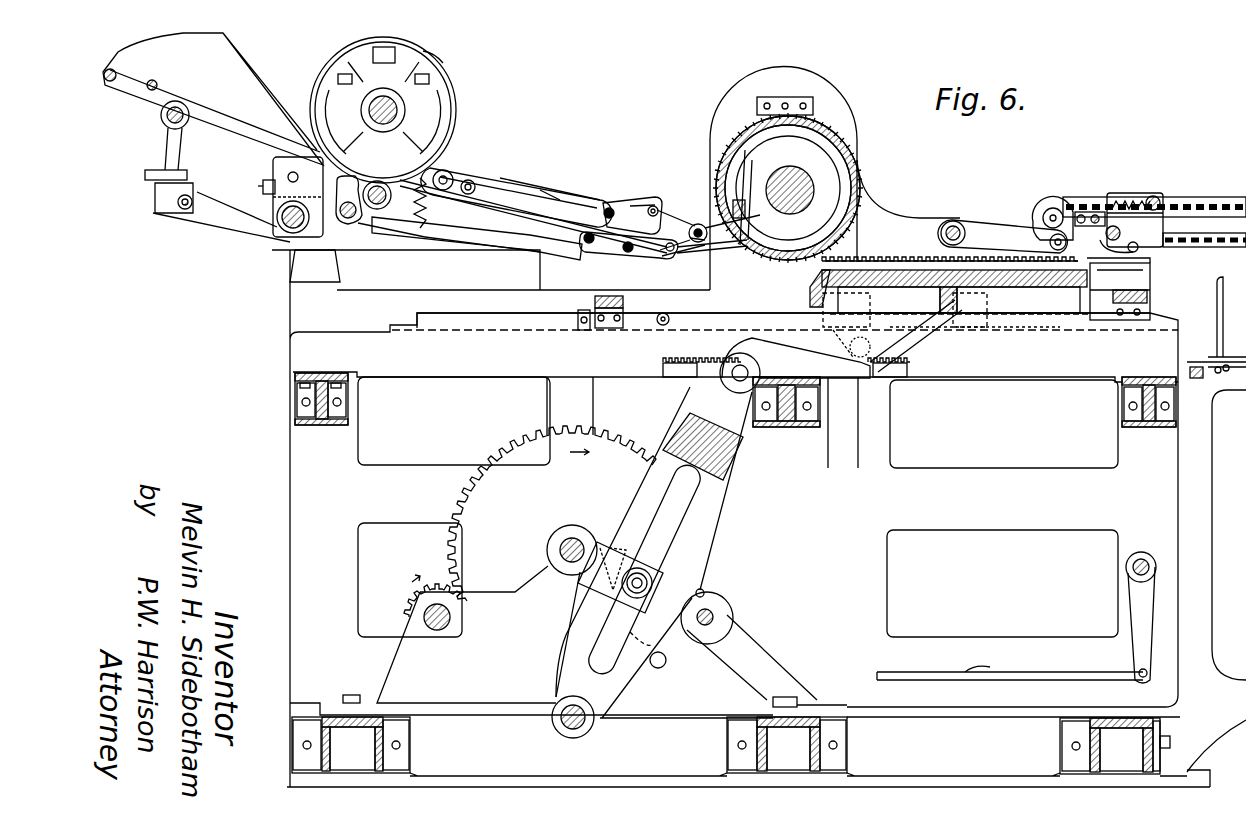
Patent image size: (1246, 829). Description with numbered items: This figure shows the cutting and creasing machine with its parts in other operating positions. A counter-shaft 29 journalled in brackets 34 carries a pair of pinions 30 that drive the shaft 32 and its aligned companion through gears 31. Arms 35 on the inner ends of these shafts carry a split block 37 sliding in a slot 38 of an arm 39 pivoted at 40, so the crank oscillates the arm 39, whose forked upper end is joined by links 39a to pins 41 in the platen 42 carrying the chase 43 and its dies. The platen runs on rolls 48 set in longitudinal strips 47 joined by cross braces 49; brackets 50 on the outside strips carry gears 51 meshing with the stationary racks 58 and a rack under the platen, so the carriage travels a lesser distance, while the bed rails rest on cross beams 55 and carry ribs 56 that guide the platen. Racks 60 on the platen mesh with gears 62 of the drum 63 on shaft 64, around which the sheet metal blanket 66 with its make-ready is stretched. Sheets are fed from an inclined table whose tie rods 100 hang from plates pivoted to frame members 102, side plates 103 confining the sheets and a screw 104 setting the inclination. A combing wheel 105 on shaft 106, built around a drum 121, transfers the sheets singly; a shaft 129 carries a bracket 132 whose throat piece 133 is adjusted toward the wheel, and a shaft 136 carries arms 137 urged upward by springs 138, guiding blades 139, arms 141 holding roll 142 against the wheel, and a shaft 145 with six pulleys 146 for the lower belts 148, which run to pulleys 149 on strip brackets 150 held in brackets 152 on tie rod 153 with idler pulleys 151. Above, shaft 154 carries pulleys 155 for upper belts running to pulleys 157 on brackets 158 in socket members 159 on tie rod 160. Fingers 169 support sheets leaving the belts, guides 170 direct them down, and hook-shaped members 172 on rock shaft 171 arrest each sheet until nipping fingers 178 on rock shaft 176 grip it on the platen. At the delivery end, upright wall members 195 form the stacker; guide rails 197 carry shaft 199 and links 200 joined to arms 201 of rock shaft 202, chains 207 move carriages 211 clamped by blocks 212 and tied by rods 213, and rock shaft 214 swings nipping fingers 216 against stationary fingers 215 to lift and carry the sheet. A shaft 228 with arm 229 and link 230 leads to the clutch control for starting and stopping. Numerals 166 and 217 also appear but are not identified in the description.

The counter-shaft 29 is at (450, 617).
The pinions 30 is at (413, 592).
The gears 31 is at (521, 441).
The shaft 32 is at (572, 540).
The brackets 34 is at (466, 634).
The arms 35 is at (610, 557).
The split block 37 is at (650, 563).
The slot 38 is at (680, 530).
The arm 39 is at (630, 503).
The links 39a is at (795, 365).
The pivotal support 40 is at (573, 728).
The pins 41 is at (855, 360).
The platen 42 is at (907, 287).
The chase 43 is at (988, 287).
The longitudinal strips 47 is at (673, 314).
The rolls 48 is at (580, 316).
The cross braces 49 is at (624, 302).
The brackets 50 is at (917, 342).
The gear 51 is at (903, 356).
The cross beams 55 is at (312, 427).
The ribs 56 is at (520, 321).
The racks 58 is at (663, 362).
The racks 60 is at (890, 258).
The gears 62 is at (883, 208).
The drum 63 is at (857, 157).
The shaft 64 is at (805, 200).
The sheet metal blanket 66 is at (840, 133).
The tie rods 100 is at (165, 110).
The frame members 102 is at (1207, 510).
The side plates 103 is at (248, 63).
The screw 104 is at (153, 173).
The combing wheel 105 is at (452, 98).
The shaft 106 is at (395, 113).
The drum 121 is at (437, 88).
The shaft 129 is at (280, 230).
The bracket 132 is at (262, 187).
The throat piece 133 is at (263, 183).
The shaft 136 is at (365, 222).
The arms 137 is at (392, 224).
The springs 138 is at (440, 241).
The guiding blades 139 is at (303, 160).
The arms 141 is at (315, 266).
The roll 142 is at (305, 225).
The shaft 145 is at (353, 218).
The pulleys 146 is at (418, 196).
The belts 148 is at (476, 244).
The pulleys 149 is at (672, 255).
The strip brackets 150 is at (667, 247).
The idler pulleys 151 is at (605, 250).
The brackets 152 is at (665, 251).
The tie rod 153 is at (628, 252).
The shaft 154 is at (467, 168).
The pulleys 155 is at (460, 204).
The pulleys 157 is at (659, 208).
The brackets 158 is at (643, 203).
The socket members 159 is at (640, 210).
The tie rod 160 is at (608, 207).
The arm 166 is at (513, 178).
The fingers 169 is at (710, 248).
The guides 170 is at (455, 156).
The rock shaft 171 is at (692, 232).
The hook-shaped members 172 is at (696, 225).
The rock shaft 176 is at (1130, 296).
The nipping fingers 178 is at (1140, 266).
The upright wall members 195 is at (1216, 307).
The guide rails 197 is at (1180, 197).
The shaft 199 is at (1053, 208).
The links 200 is at (1043, 218).
The arms 201 is at (985, 222).
The rock shaft 202 is at (953, 222).
The chains 207 is at (1220, 197).
The carriage 211 is at (1135, 220).
The clamp blocks 212 is at (1117, 200).
The tie rods 213 is at (1155, 196).
The rock shaft 214 is at (1138, 248).
The stationary fingers 215 is at (1050, 242).
The nipping fingers 216 is at (1150, 281).
The pin 217 is at (1087, 212).
The shaft 228 is at (1133, 566).
The arm 229 is at (1137, 608).
The link 230 is at (988, 670).